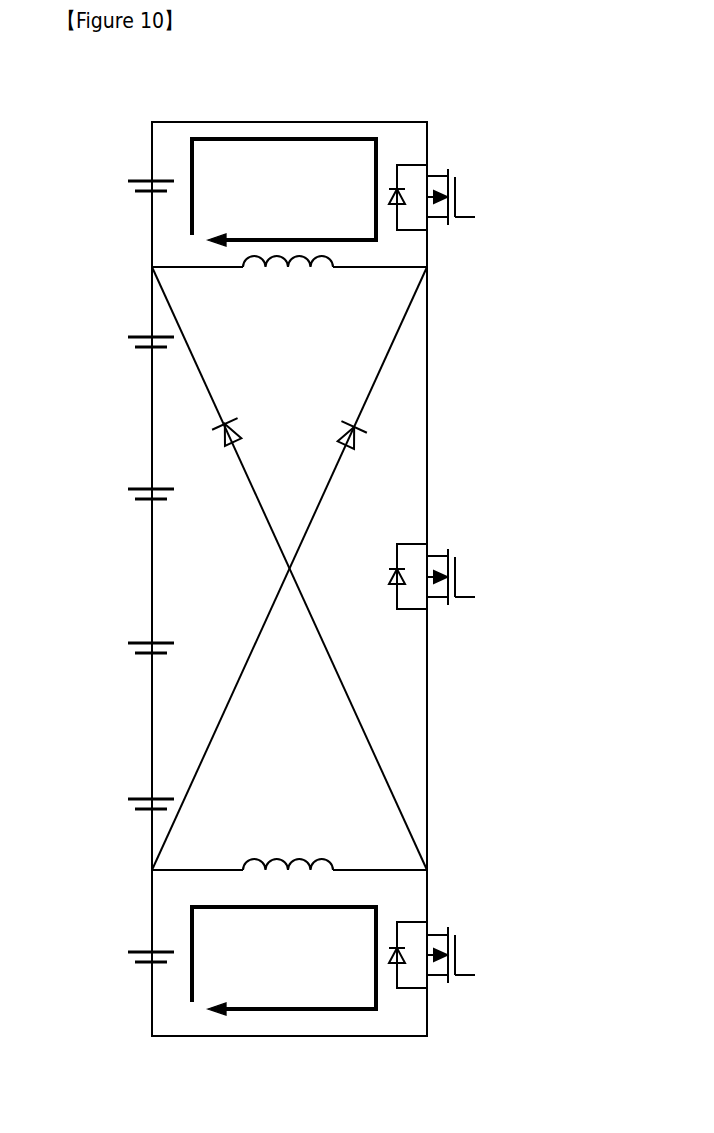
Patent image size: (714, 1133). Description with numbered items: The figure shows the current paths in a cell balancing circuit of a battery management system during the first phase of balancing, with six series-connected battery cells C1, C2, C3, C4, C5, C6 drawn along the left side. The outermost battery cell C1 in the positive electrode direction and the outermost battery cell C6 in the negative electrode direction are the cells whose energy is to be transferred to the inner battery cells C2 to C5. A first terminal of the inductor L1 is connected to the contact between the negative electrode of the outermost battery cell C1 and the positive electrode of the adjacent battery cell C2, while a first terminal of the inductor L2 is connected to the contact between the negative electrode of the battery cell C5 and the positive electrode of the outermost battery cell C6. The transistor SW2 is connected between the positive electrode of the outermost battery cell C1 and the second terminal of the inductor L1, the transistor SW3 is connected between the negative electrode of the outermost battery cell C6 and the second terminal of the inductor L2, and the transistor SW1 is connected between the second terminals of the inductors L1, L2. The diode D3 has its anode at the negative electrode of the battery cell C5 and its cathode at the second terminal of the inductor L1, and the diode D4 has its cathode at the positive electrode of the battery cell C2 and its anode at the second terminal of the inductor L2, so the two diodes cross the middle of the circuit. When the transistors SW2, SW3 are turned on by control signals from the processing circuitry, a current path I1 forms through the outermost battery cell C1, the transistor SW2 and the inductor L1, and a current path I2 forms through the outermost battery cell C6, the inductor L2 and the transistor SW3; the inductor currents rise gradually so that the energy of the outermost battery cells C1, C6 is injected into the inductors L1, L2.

The outermost battery cell C1 is at (131, 178).
The battery cell C2 is at (131, 334).
The battery cell C3 is at (131, 486).
The battery cell C4 is at (131, 640).
The battery cell C5 is at (131, 796).
The outermost battery cell C6 is at (131, 949).
The transistor SW1 is at (456, 566).
The transistor SW2 is at (456, 188).
The transistor SW3 is at (456, 944).
The diode D3 is at (356, 449).
The diode D4 is at (239, 432).
The inductor L1 is at (308, 270).
The inductor L2 is at (318, 860).
The current path I1 is at (194, 160).
The current path I2 is at (194, 932).